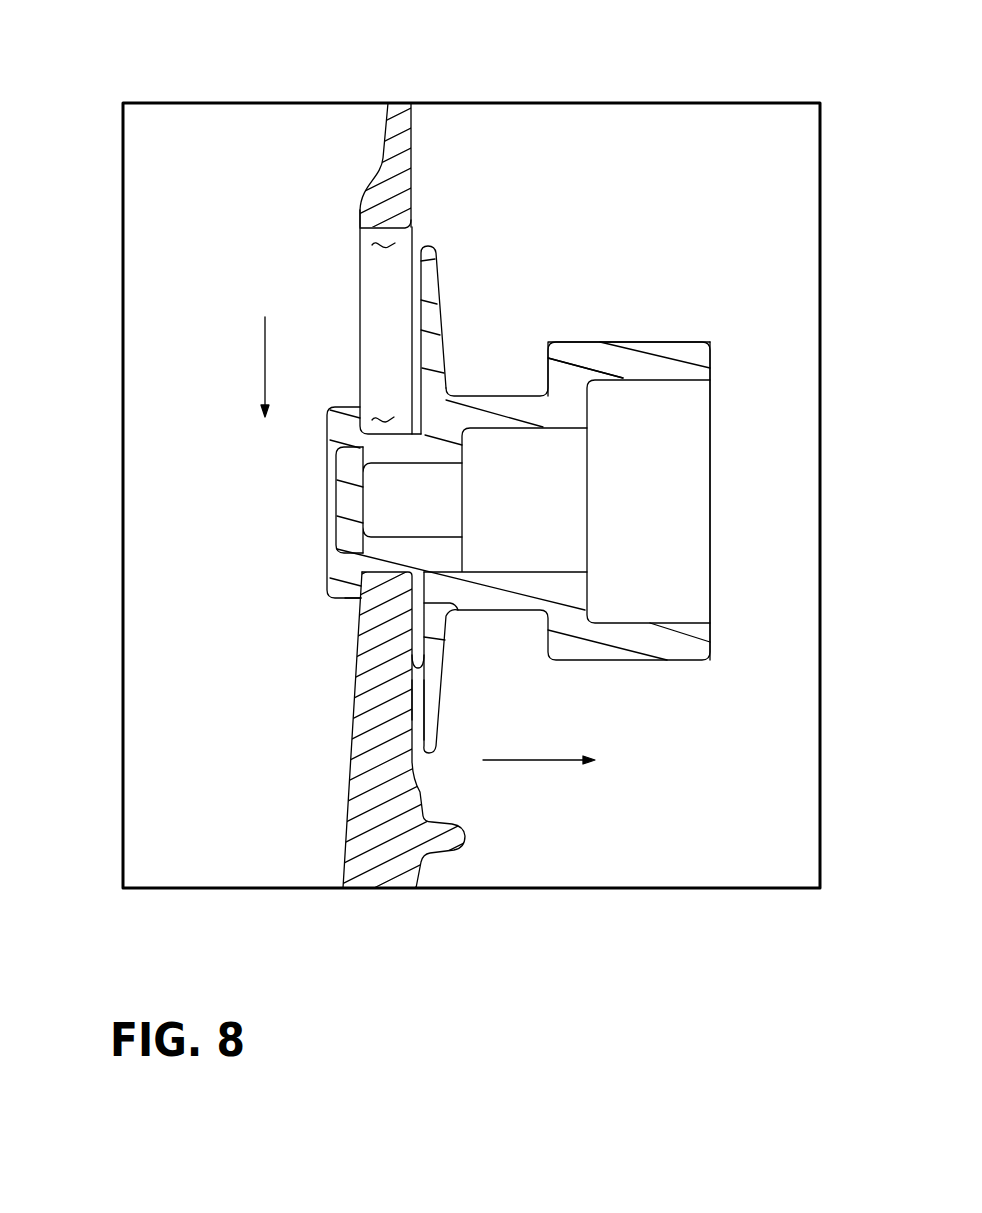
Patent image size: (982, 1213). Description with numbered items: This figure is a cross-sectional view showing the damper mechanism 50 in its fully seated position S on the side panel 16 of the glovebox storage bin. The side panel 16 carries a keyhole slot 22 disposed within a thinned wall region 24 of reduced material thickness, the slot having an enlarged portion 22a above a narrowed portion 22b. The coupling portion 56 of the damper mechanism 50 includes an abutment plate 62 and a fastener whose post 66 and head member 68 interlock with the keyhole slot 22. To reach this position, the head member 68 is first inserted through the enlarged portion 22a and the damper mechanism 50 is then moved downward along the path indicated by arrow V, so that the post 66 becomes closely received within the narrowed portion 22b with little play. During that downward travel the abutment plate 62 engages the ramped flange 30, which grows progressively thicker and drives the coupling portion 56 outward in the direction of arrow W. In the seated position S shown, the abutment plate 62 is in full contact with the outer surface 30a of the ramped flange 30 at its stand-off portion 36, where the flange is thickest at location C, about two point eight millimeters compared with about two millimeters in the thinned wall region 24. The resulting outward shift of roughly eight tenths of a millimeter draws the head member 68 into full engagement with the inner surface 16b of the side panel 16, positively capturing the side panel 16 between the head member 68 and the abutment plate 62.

The side panel 16 is at (366, 145).
The inner surface of the side panel 16b is at (354, 687).
The keyhole slot 22 is at (373, 317).
The enlarged portion 22a is at (375, 247).
The narrowed portion 22b is at (378, 424).
The thinned wall region 24 is at (412, 168).
The ramped flange 30 is at (413, 720).
The outer surface of the ramped flange 30a is at (421, 684).
The stand-off portion 36 is at (398, 676).
The damper mechanism 50 is at (658, 362).
The coupling portion 56 is at (716, 523).
The abutment plate 62 is at (426, 250).
The post 66 is at (360, 604).
The head member 68 is at (327, 580).
The seated position S is at (724, 363).
The arrow V is at (263, 368).
The arrow W is at (528, 762).
The location C is at (396, 697).